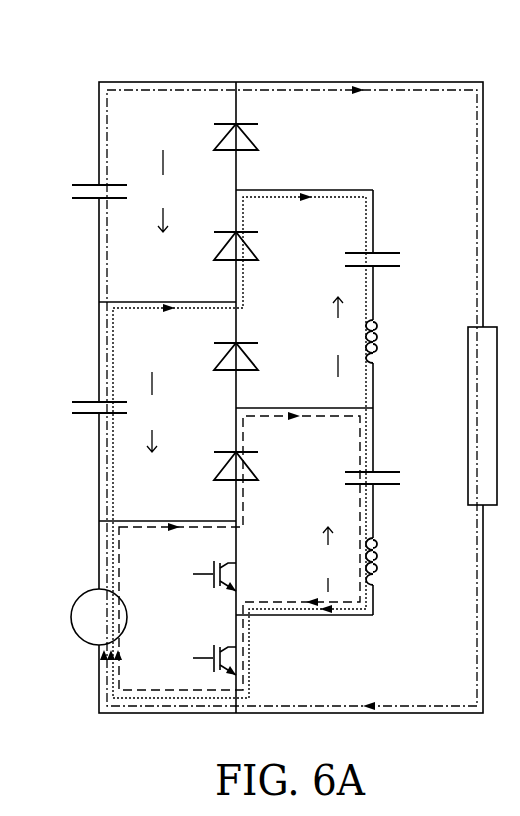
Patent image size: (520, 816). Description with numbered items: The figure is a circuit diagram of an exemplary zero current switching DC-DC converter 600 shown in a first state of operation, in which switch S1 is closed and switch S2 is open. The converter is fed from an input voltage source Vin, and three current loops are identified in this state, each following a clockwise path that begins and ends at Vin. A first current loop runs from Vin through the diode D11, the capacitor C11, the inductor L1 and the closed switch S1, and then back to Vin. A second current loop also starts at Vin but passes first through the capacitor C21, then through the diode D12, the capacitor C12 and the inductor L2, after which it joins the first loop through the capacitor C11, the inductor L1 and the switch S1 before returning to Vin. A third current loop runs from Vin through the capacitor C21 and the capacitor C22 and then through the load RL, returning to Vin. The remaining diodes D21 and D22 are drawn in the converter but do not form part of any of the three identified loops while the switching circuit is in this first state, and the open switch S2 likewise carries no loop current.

The converter 600 is at (148, 54).
The input voltage source Vin is at (99, 624).
The switch S1 is at (239, 659).
The switch S2 is at (239, 576).
The diode D1 of first stage D11 is at (259, 466).
The diode D1 of second stage D12 is at (259, 246).
The diode D2 of first stage D21 is at (259, 357).
The diode D2 of second stage D22 is at (259, 139).
The capacitor C1 of first stage C11 is at (394, 479).
The capacitor C1 of second stage C12 is at (394, 259).
The capacitor C2 of first stage C21 is at (76, 412).
The capacitor C2 of second stage C22 is at (76, 193).
The inductor L1 is at (390, 561).
The inductor L2 is at (393, 341).
The load RL is at (482, 416).